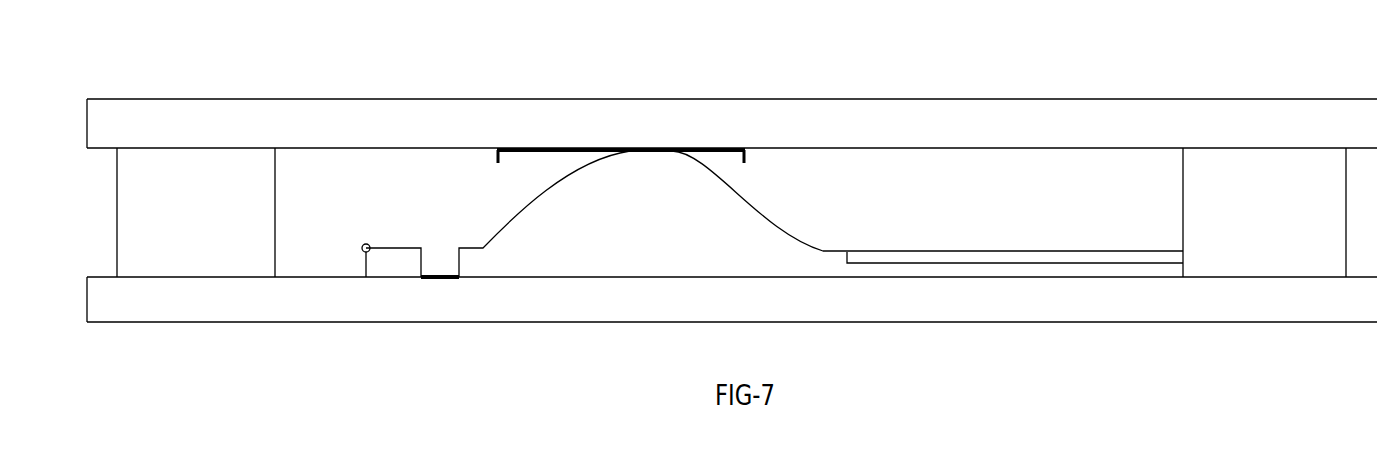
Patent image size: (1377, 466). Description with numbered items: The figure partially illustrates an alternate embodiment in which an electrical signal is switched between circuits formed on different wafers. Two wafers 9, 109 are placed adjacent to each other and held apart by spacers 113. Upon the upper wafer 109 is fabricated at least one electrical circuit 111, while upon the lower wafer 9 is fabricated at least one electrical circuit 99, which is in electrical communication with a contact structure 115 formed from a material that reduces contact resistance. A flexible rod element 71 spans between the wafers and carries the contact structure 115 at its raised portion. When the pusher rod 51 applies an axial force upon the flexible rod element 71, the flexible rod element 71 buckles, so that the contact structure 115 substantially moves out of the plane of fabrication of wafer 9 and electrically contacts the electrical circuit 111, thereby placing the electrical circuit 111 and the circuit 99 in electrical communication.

The wafer 9 is at (213, 312).
The wafer 109 is at (262, 137).
The spacers 113 is at (168, 235).
The electrical circuit 111 is at (598, 148).
The contact structure 115 is at (652, 152).
The flexible rod element 71 is at (762, 217).
The pusher rod 51 is at (978, 252).
The electrical circuit 99 is at (438, 278).